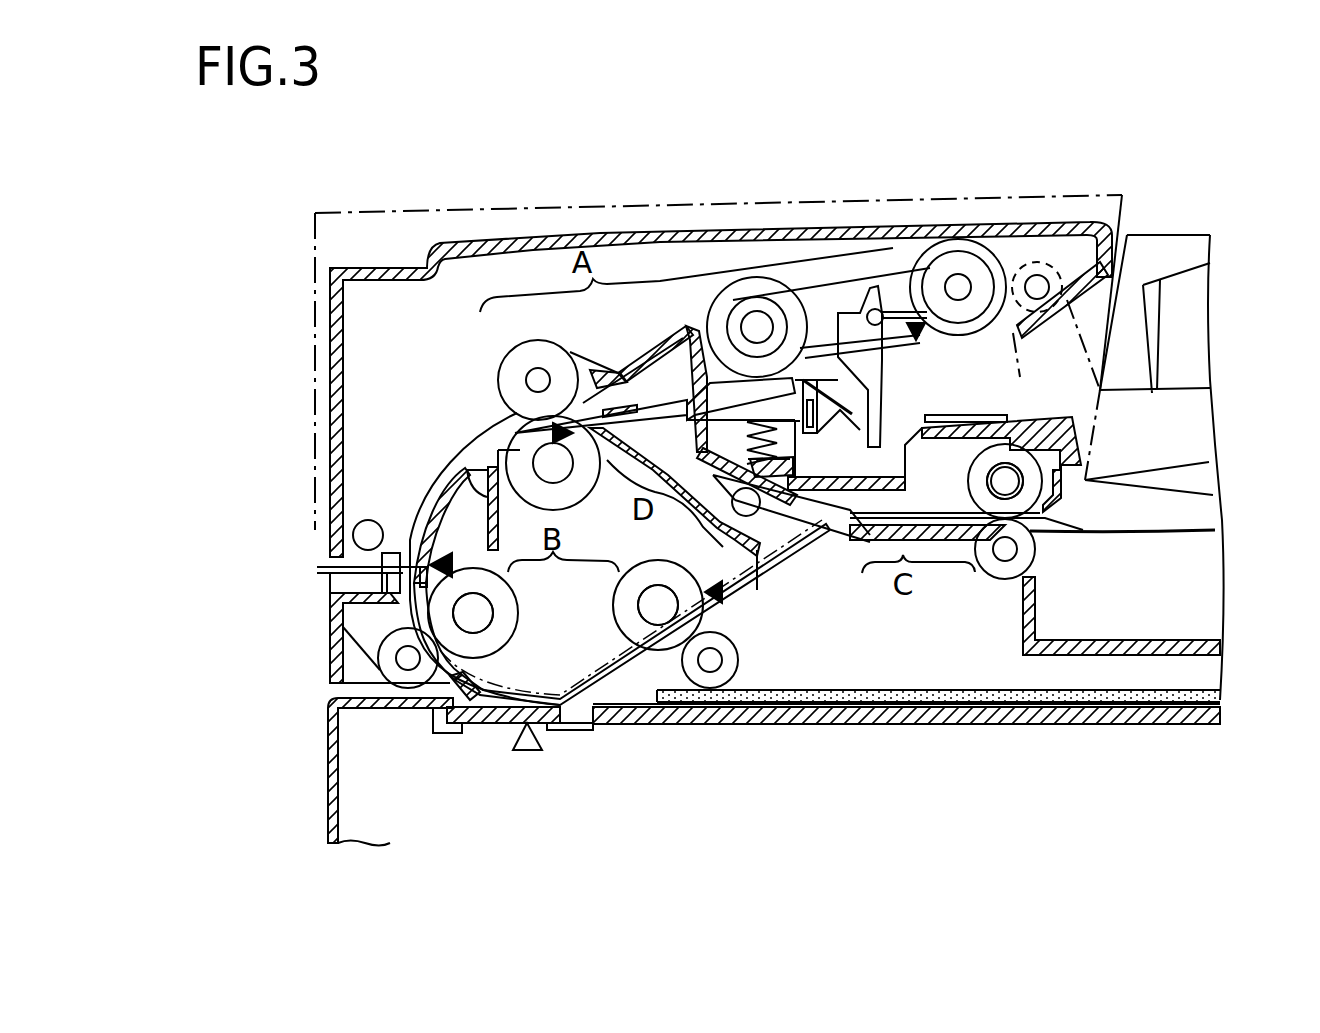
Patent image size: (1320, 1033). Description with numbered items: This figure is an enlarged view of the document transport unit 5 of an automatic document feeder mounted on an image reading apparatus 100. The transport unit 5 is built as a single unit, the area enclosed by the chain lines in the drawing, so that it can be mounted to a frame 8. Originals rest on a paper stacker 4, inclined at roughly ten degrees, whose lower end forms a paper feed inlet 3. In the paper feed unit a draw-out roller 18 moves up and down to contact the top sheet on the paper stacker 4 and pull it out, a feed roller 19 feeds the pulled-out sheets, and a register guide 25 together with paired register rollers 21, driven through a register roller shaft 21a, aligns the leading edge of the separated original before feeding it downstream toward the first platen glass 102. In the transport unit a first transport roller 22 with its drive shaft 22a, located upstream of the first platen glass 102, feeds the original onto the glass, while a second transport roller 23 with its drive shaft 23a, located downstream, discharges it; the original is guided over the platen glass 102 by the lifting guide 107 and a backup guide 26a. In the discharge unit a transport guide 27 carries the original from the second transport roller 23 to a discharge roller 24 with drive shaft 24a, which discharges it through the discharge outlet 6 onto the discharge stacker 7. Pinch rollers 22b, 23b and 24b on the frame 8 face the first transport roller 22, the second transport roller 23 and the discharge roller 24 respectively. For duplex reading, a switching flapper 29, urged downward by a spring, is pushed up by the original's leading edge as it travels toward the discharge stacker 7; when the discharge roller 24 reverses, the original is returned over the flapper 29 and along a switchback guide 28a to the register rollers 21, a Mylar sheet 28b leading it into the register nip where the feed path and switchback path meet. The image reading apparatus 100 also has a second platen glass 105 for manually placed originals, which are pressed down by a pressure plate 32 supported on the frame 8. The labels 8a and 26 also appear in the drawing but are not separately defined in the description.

The paper feed inlet 3 is at (899, 396).
The paper stacker 4 is at (1193, 383).
The document transport unit 5 is at (552, 211).
The discharge outlet 6 is at (1050, 548).
The discharge stacker 7 is at (1160, 648).
The frame 8 is at (1207, 673).
The top sheet 8a is at (1090, 686).
The draw-out roller 18 is at (961, 242).
The feed roller 19 is at (747, 290).
The register rollers 21 is at (515, 433).
The register roller shaft 21a is at (535, 373).
The first transport roller 22 is at (472, 568).
The drive shaft 22a is at (463, 612).
The pinch roller 22b is at (405, 672).
The second transport roller 23 is at (670, 570).
The drive shaft 23a is at (647, 605).
The pinch roller 23b is at (733, 664).
The discharge roller 24 is at (1023, 460).
The drive shaft 24a is at (1000, 478).
The pinch roller 24b is at (1027, 553).
The register guide 25 is at (650, 340).
The curved guide 26 is at (537, 700).
The backup guide 26a is at (553, 705).
The transport guide 27 is at (922, 533).
The switchback guide 28a is at (650, 430).
The Mylar sheet 28b is at (583, 356).
The switching flapper 29 is at (810, 517).
The pressure plate 32 is at (923, 705).
The image reading apparatus 100 is at (325, 770).
The first platen glass 102 is at (485, 715).
The second platen glass 105 is at (744, 716).
The lifting guide 107 is at (600, 700).